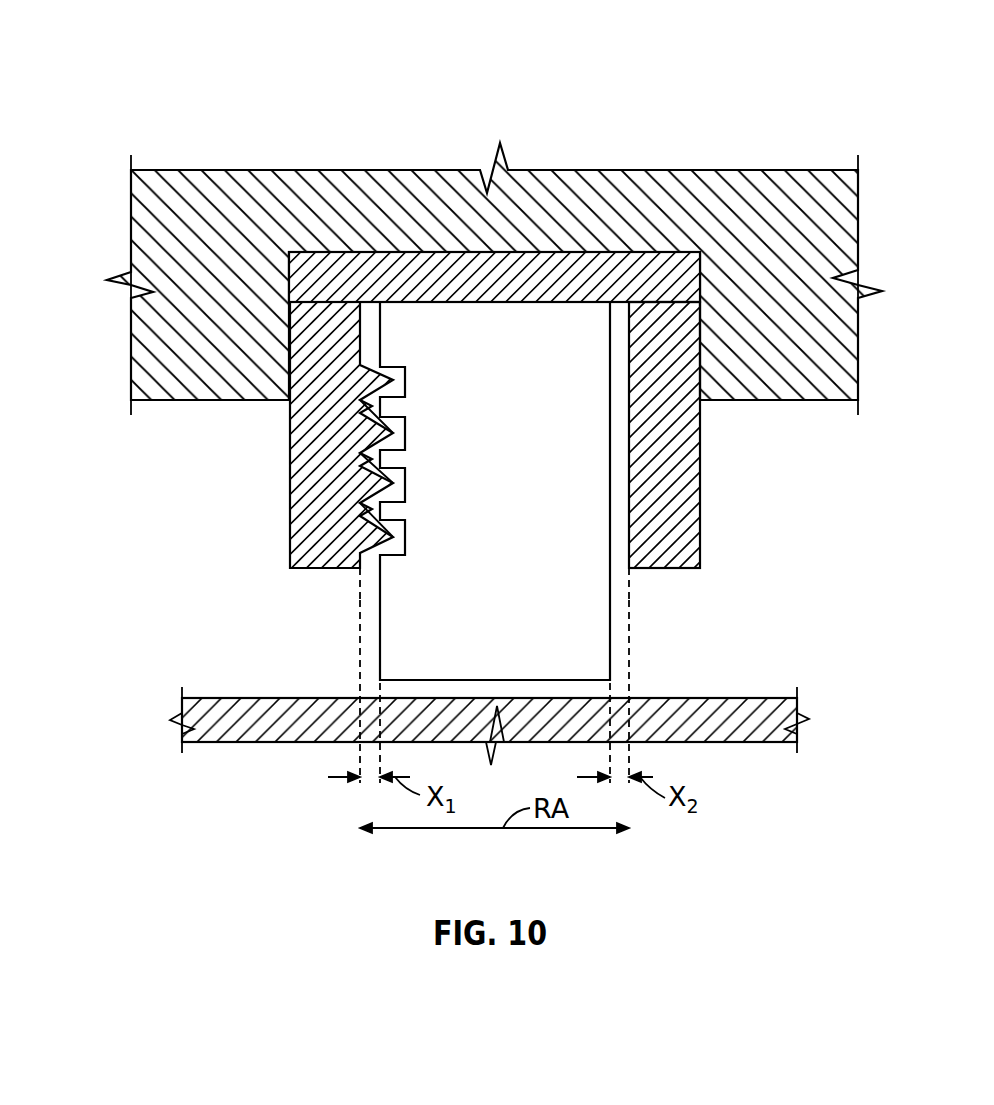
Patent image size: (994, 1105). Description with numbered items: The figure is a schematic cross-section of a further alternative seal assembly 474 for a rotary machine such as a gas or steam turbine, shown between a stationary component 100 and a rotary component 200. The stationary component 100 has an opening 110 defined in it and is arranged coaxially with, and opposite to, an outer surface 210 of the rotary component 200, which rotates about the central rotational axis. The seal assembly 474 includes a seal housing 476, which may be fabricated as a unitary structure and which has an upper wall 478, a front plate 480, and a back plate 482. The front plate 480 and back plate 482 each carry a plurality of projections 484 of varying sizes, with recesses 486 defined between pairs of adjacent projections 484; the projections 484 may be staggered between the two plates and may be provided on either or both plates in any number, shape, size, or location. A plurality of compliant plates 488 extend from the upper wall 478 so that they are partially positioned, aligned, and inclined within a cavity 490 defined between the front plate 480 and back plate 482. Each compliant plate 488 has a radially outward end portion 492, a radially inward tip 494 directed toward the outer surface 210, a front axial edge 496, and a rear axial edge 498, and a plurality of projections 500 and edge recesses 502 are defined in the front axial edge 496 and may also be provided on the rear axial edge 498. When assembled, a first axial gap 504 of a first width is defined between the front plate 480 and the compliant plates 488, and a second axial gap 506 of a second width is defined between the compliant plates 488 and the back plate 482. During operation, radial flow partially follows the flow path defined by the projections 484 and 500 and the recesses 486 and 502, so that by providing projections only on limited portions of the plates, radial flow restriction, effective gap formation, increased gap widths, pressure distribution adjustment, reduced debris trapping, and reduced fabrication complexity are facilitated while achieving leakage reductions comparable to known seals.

The stationary component 100 is at (521, 231).
The opening 110 is at (643, 250).
The rotary component 200 is at (797, 742).
The outer surface 210 is at (697, 698).
The seal assembly 474 is at (158, 116).
The seal housing 476 is at (707, 423).
The upper wall 478 is at (521, 287).
The front plate 480 is at (351, 372).
The back plate 482 is at (689, 363).
The projections 484 is at (360, 408).
The recesses 486 is at (360, 505).
The compliant plates 488 is at (521, 571).
The cavity 490 is at (618, 331).
The radially outward end portion 492 is at (514, 302).
The radially inward tip 494 is at (493, 680).
The front axial edge 496 is at (381, 328).
The rear axial edge 498 is at (608, 415).
The projections 500 is at (398, 460).
The edge recesses 502 is at (405, 433).
The first axial gap 504 is at (370, 567).
The second axial gap 506 is at (618, 568).